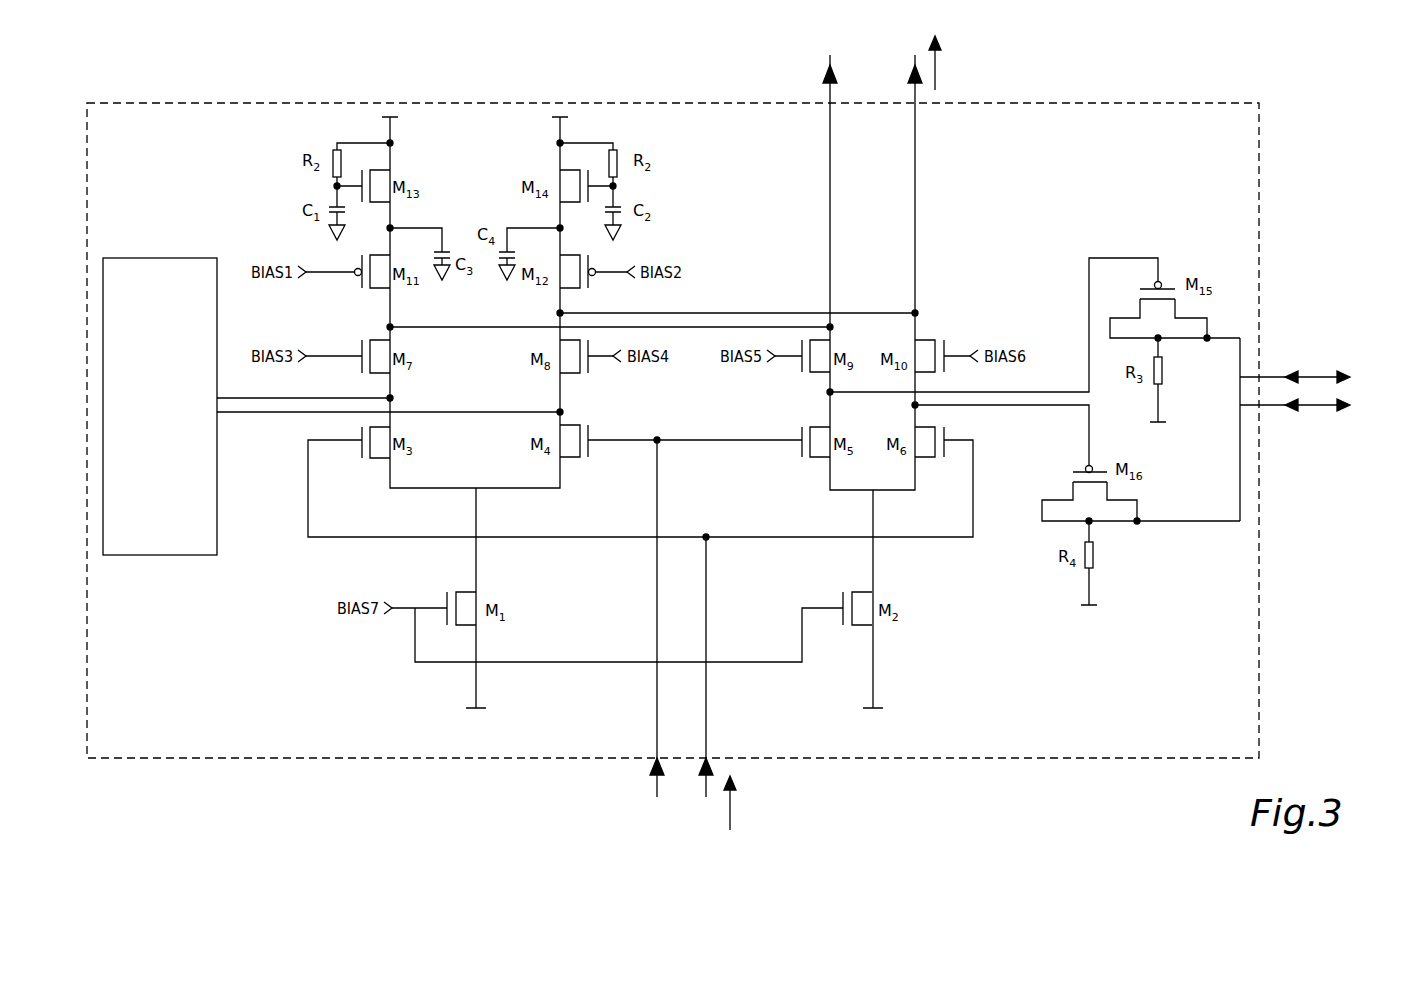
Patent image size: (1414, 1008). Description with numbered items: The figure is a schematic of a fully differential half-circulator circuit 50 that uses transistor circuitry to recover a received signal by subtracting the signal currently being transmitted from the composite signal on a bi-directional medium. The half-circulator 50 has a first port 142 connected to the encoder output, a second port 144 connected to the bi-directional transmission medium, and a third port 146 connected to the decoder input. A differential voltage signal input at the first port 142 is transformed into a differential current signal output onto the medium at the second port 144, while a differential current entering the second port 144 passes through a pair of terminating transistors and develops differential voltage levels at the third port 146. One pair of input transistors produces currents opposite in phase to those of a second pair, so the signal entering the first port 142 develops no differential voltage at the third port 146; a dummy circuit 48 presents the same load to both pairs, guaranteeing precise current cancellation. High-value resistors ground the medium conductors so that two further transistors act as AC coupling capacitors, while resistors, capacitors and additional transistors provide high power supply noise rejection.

The dummy load 48 is at (108, 258).
The half-circulator circuit 50 is at (152, 103).
The first port 142 is at (682, 808).
The second port 144 is at (1360, 371).
The third port 146 is at (873, 45).